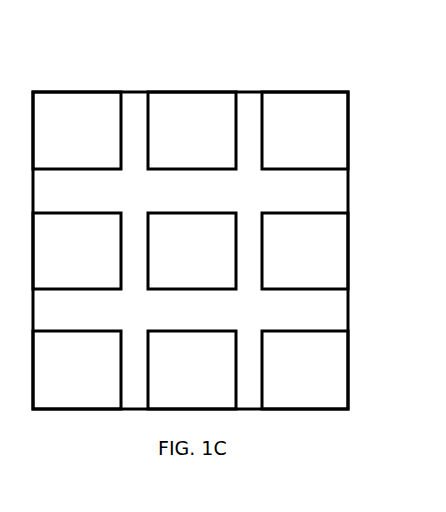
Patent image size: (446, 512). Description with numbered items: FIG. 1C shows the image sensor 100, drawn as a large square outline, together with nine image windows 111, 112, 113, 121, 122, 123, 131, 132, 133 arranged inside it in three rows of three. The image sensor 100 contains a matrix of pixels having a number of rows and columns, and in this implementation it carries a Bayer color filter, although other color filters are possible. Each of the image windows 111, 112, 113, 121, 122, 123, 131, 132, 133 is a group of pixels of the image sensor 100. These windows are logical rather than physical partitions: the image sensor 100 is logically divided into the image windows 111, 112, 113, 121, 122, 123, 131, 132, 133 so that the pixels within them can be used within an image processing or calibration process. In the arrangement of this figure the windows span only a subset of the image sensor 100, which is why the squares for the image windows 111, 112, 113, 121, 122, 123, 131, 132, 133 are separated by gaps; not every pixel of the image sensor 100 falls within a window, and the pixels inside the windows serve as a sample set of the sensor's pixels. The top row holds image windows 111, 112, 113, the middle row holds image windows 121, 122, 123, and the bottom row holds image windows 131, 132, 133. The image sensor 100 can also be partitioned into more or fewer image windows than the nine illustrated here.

The image sensor 100 is at (227, 60).
The image window 111 is at (77, 130).
The image window 112 is at (192, 130).
The image window 113 is at (305, 130).
The image window 121 is at (77, 251).
The image window 122 is at (192, 251).
The image window 123 is at (305, 251).
The image window 131 is at (77, 370).
The image window 132 is at (192, 370).
The image window 133 is at (305, 370).